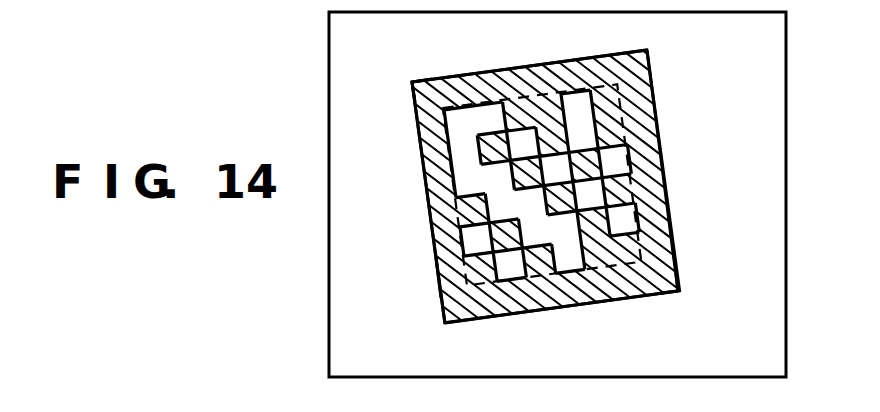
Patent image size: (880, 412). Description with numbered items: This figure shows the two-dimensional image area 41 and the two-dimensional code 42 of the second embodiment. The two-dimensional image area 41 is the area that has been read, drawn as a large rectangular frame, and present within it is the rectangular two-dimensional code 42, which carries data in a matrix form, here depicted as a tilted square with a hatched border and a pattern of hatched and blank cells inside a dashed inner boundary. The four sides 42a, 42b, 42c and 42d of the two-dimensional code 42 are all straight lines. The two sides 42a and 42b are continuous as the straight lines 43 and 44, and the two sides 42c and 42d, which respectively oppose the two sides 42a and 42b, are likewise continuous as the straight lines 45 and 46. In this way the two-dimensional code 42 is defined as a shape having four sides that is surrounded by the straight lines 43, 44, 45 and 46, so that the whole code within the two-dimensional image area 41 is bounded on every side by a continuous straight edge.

The two-dimensional image area 41 is at (787, 247).
The two-dimensional code figure 42 is at (666, 176).
The side 42a is at (430, 222).
The side 42b is at (564, 304).
The side 42c is at (653, 110).
The side 42d is at (528, 67).
The straight line 43 is at (438, 279).
The straight line 44 is at (660, 296).
The straight line 45 is at (412, 80).
The straight line 46 is at (673, 246).